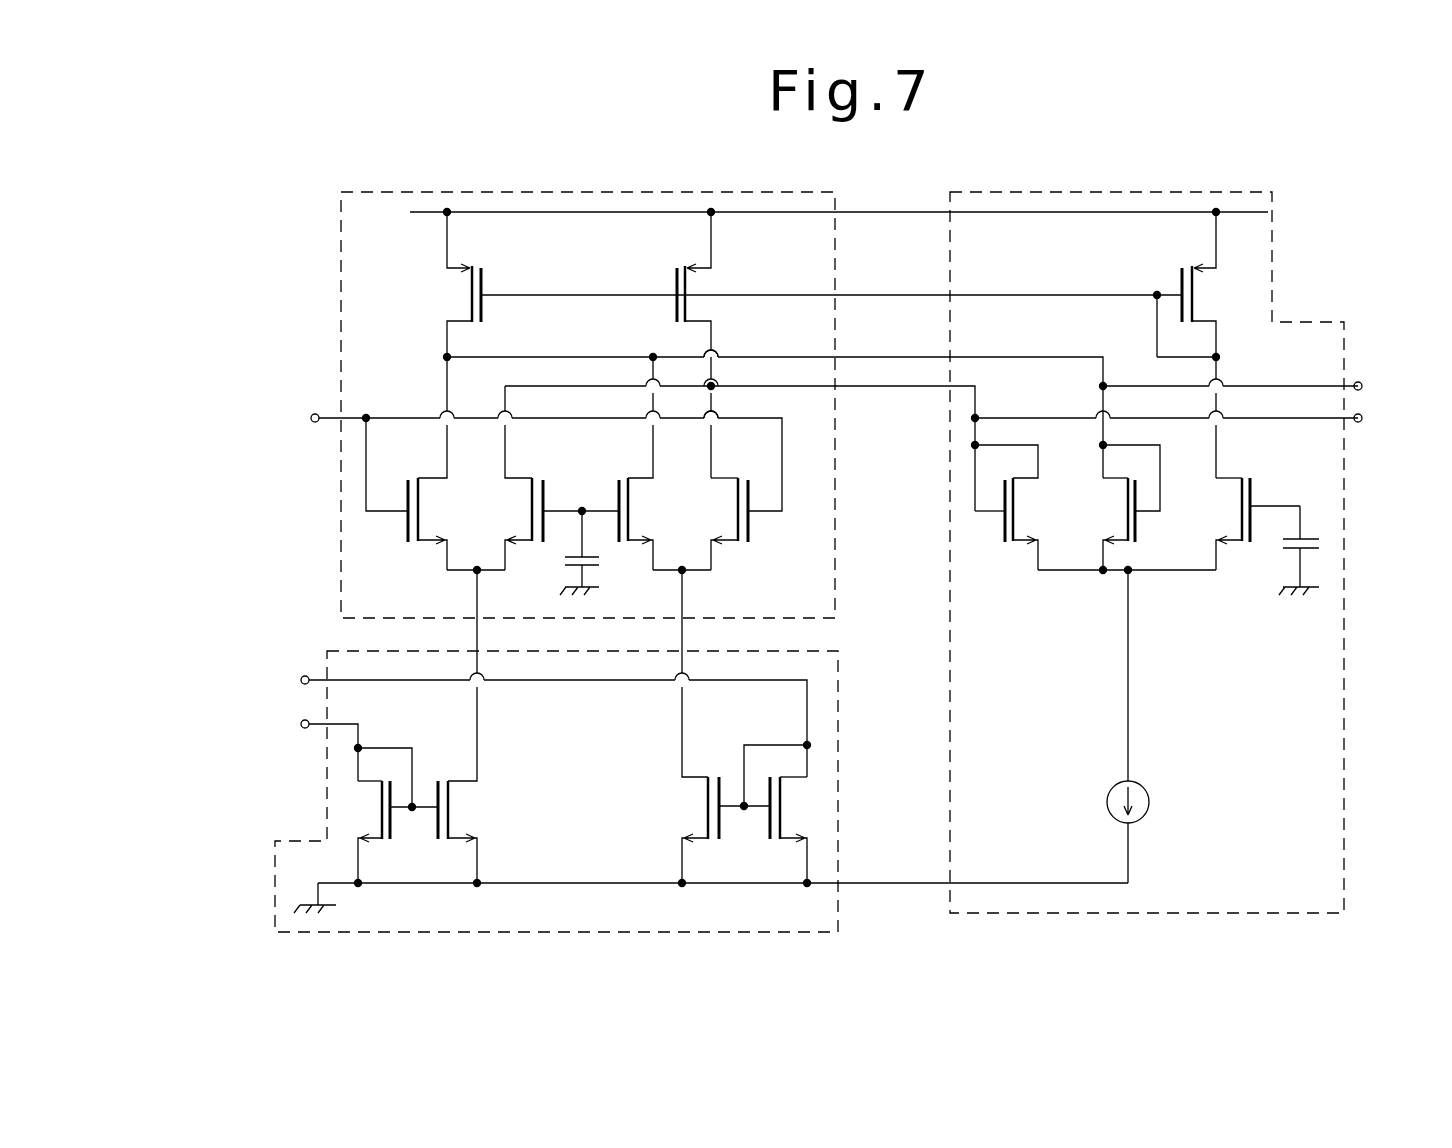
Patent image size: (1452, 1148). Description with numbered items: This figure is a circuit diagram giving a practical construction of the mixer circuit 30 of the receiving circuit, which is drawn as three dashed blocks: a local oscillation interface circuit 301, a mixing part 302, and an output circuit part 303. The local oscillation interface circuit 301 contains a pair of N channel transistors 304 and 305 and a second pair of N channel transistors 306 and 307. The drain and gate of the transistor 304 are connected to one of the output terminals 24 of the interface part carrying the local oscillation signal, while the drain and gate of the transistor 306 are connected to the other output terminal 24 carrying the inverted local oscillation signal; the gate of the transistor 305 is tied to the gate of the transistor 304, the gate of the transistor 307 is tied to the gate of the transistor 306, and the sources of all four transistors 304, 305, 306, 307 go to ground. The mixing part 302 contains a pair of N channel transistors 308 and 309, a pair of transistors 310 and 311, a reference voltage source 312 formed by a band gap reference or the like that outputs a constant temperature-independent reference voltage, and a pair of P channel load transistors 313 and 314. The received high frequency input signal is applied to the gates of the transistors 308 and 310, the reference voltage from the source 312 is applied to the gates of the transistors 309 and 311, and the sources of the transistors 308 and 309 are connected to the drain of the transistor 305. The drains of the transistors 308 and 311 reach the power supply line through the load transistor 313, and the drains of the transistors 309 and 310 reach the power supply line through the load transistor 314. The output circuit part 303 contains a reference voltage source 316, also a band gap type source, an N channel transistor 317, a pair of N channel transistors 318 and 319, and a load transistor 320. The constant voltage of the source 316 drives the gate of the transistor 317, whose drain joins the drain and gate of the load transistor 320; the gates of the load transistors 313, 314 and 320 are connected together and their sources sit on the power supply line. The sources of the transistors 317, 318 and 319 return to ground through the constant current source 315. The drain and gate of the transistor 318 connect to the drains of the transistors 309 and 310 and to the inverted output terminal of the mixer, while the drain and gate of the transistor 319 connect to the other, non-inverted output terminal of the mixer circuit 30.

The mixer circuit 30 is at (824, 166).
The output terminals 24 is at (306, 674).
The local oscillation interface circuit 301 is at (838, 672).
The mixing part 302 is at (340, 240).
The output circuit part 303 is at (1272, 254).
The N channel transistor 304 is at (364, 808).
The N channel transistor 305 is at (462, 806).
The N channel transistor 306 is at (796, 806).
The N channel transistor 307 is at (698, 808).
The N channel transistor 308 is at (430, 511).
The N channel transistor 309 is at (518, 508).
The transistor 310 is at (723, 508).
The transistor 311 is at (640, 511).
The reference voltage source 312 is at (597, 560).
The P channel load transistor 313 is at (465, 292).
The P channel load transistor 314 is at (700, 283).
The constant current source 315 is at (1152, 790).
The reference voltage source 316 is at (1284, 548).
The N channel transistor 317 is at (1232, 505).
The N channel transistor 318 is at (1025, 510).
The N channel transistor 319 is at (1113, 508).
The load transistor 320 is at (1200, 298).